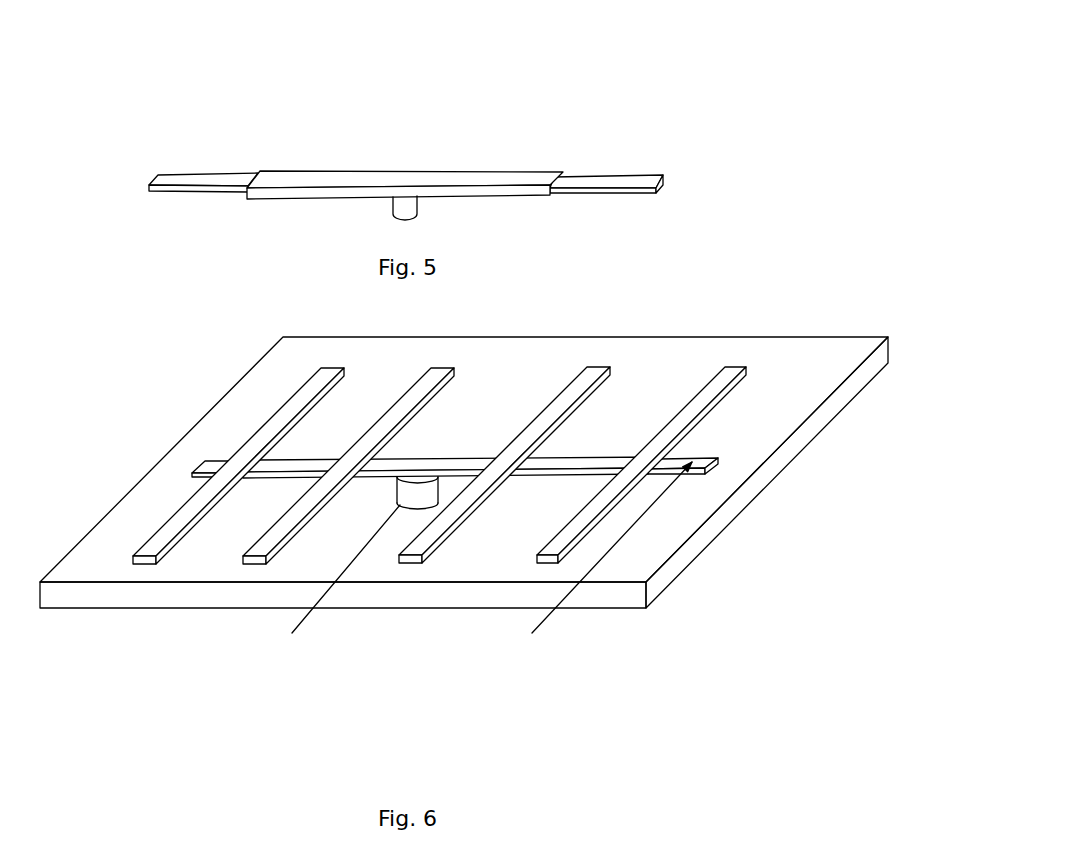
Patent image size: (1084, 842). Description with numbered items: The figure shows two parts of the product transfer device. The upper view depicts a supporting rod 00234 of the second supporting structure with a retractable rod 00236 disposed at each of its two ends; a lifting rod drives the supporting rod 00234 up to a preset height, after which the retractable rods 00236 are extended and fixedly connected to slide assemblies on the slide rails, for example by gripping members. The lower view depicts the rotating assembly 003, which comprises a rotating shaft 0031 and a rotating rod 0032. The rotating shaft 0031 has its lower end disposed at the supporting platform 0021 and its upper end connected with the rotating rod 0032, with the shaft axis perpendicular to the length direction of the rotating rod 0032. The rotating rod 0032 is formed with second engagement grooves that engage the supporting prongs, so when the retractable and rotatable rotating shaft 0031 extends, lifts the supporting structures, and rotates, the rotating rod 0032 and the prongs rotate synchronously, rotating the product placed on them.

In FIG. 5, the supporting rod 00234 is at (523, 180).
In FIG. 5, the retractable rod 00236 is at (578, 182).
In FIG. 6, the supporting platform 0021 is at (662, 577).
In FIG. 6, the rotating assembly 003 is at (455, 592).
In FIG. 6, the rotating shaft 0031 is at (400, 505).
In FIG. 6, the rotating rod 0032 is at (692, 462).